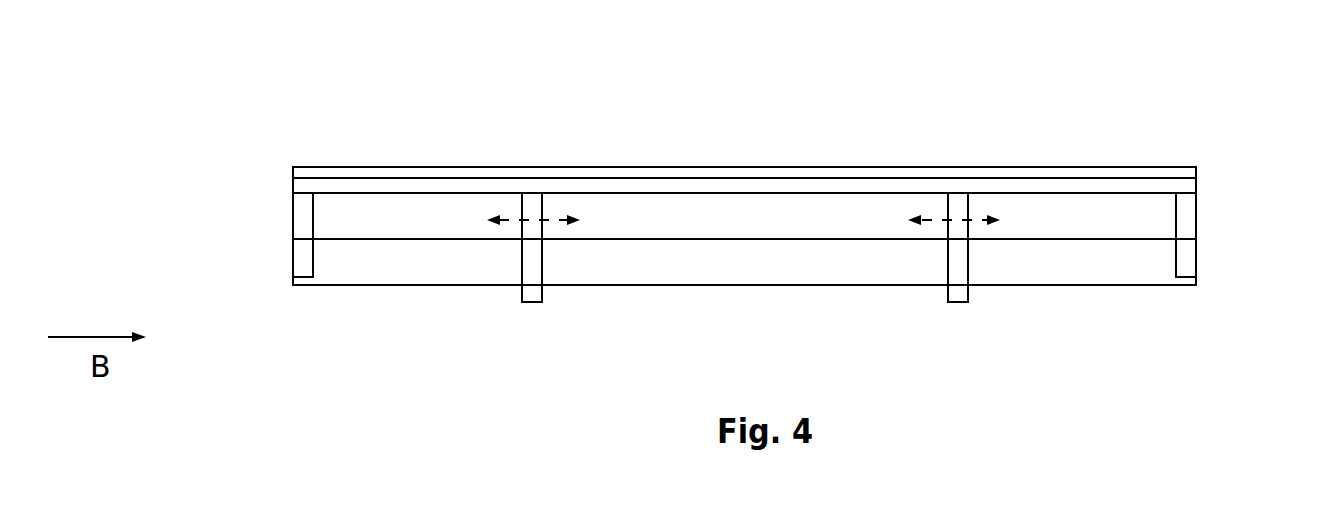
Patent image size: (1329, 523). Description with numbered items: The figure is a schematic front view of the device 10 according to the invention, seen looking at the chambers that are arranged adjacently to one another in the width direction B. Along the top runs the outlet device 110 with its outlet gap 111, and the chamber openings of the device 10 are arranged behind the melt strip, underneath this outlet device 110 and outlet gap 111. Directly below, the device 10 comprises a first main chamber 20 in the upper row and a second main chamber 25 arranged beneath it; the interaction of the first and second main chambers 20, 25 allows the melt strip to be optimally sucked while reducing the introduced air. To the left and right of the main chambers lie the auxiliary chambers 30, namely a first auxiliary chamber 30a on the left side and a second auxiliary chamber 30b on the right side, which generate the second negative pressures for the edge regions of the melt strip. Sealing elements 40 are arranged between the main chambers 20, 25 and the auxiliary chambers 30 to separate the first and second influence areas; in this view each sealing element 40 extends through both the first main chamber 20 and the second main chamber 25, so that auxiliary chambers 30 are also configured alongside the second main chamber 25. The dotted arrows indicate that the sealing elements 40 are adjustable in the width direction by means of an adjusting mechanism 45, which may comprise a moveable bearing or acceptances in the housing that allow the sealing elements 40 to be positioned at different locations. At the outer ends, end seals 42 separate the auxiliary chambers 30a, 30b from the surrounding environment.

The device 10 is at (1135, 143).
The outlet device 110 is at (1197, 184).
The outlet gap 111 is at (313, 177).
The end seal 42 is at (293, 240).
The sealing element 40 is at (521, 255).
The adjusting mechanism 45 is at (929, 218).
The main chamber 20 is at (745, 215).
The second main chamber 25 is at (745, 266).
The auxiliary chamber 30 is at (744, 239).
The first auxiliary chamber 30a is at (417, 239).
The second auxiliary chamber 30b is at (1072, 239).